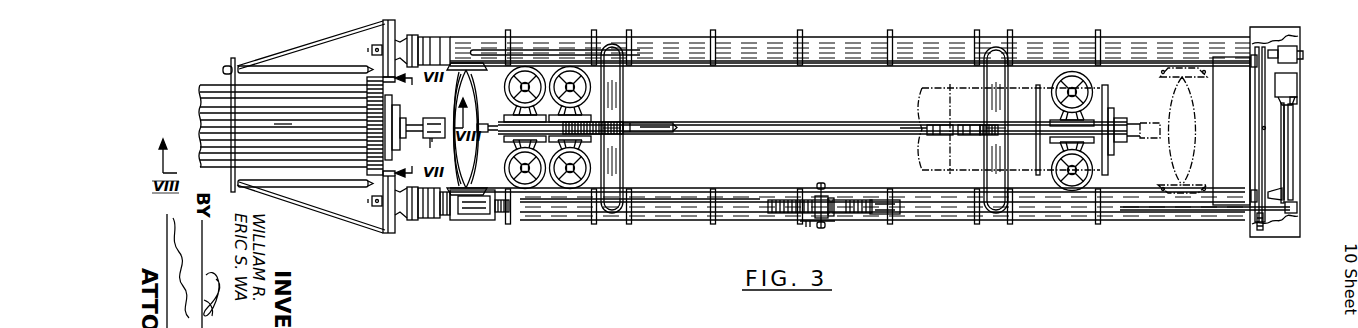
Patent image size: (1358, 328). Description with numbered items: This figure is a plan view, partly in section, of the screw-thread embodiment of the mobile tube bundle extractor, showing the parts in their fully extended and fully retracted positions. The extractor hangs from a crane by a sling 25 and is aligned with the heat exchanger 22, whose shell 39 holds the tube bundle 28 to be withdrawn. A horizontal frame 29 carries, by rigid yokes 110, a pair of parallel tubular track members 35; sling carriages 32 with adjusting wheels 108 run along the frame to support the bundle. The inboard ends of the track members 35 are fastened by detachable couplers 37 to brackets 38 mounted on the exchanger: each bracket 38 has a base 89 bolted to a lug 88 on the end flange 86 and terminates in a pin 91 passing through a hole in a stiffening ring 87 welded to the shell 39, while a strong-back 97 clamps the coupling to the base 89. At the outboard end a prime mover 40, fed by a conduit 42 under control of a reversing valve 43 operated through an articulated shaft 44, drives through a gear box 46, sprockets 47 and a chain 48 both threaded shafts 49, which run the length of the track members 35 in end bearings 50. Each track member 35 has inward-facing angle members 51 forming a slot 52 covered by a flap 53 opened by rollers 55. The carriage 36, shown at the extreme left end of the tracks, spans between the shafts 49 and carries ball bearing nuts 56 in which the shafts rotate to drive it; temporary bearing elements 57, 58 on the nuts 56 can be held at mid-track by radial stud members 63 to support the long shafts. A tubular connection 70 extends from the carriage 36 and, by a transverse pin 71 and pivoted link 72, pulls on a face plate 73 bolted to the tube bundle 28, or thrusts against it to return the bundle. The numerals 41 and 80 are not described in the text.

The tubular heat exchanger 22 is at (200, 112).
The sling 25 is at (662, 127).
The tube bundle 28 is at (920, 163).
The horizontal frame 29 is at (748, 122).
The sling carriage 32 is at (515, 117).
The track member 35 is at (932, 42).
The carriage 36 is at (473, 159).
The detachable coupler 37 is at (412, 36).
The bracket 38 is at (308, 44).
The shell 39 is at (265, 131).
The prime mover 40 is at (1297, 85).
The end box 41 is at (1243, 142).
The conduit 42 is at (680, 207).
The reversing valve 43 is at (1303, 101).
The articulated shaft 44 is at (1301, 153).
The gear box 46 is at (1297, 52).
The sprocket 47 is at (1260, 233).
The chain 48 is at (1257, 96).
The threaded shaft 49 is at (504, 212).
The bearing 50 is at (429, 220).
The angle member 51 is at (763, 66).
The slot 52 is at (798, 200).
The flap 53 is at (468, 69).
The roller 55 is at (452, 67).
The ball bearing nut 56 is at (473, 219).
The temporary bearing element 57 is at (832, 224).
The temporary bearing element 58 is at (444, 216).
The radial stud member 63 is at (823, 183).
The tubular connection 70 is at (425, 137).
The transverse pin 71 is at (429, 137).
The link 72 is at (412, 126).
The face plate 73 is at (405, 120).
The hub 80 is at (390, 118).
The end flange 86 is at (368, 113).
The stiffening ring 87 is at (232, 60).
The lug 88 is at (368, 68).
The base 89 is at (388, 20).
The pin 91 is at (223, 68).
The strong-back 97 is at (373, 48).
The adjusting wheel 108 is at (556, 66).
The yoke 110 is at (632, 174).